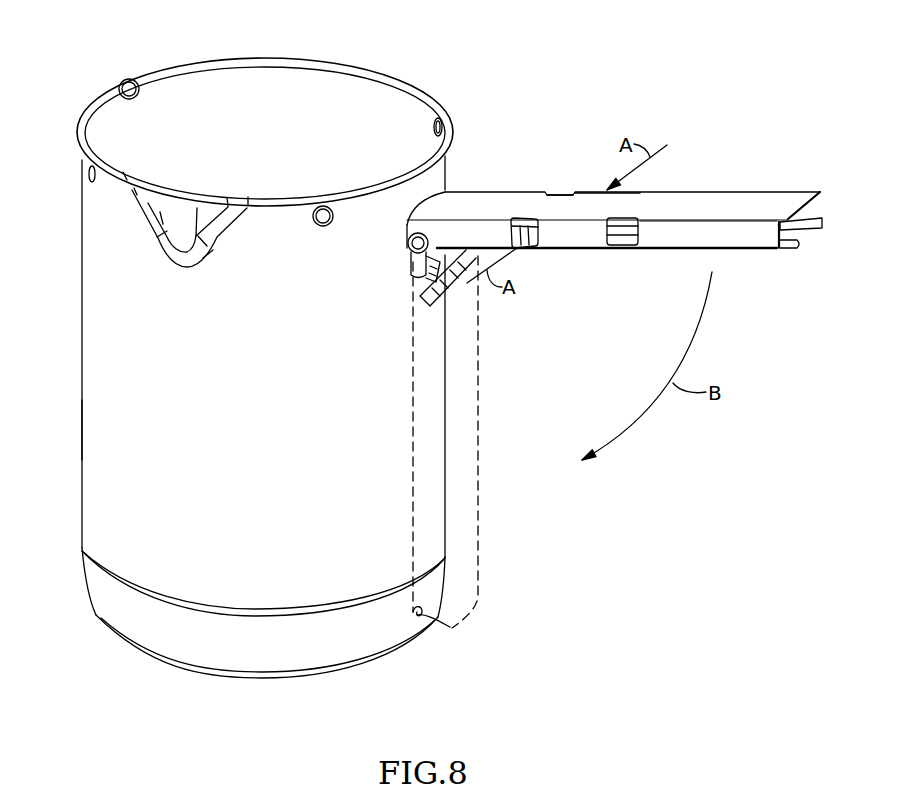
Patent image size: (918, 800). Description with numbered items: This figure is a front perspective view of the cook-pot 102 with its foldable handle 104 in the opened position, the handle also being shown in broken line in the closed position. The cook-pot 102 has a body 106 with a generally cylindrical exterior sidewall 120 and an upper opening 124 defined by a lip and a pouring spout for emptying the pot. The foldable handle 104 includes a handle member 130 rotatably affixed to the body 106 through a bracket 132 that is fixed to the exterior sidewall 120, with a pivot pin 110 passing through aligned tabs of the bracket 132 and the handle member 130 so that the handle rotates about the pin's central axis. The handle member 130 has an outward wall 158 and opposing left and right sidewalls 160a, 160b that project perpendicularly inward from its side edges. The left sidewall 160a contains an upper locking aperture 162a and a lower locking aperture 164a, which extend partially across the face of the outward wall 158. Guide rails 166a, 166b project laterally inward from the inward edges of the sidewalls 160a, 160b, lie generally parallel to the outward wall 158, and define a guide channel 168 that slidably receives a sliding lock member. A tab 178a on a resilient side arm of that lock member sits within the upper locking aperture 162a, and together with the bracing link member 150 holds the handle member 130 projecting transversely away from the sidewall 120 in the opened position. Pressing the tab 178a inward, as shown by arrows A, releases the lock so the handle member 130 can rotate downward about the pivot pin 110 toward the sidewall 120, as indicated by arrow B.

The cook-pot 102 is at (80, 268).
The foldable handle 104 is at (643, 360).
The body 106 is at (266, 382).
The pivot pin 110 is at (426, 238).
The exterior sidewall 120 is at (97, 430).
The upper opening 124 is at (312, 92).
The handle member 130 is at (745, 200).
The bracket 132 is at (440, 280).
The bracing link member 150 is at (450, 300).
The outward wall 158 is at (714, 217).
The left sidewall 160a is at (672, 232).
The right sidewall 160b is at (816, 208).
The upper locking aperture 162a is at (552, 232).
The lower locking aperture 164a is at (620, 240).
The guide rail 166a is at (793, 249).
The guide rail 166b is at (825, 218).
The guide channel 168 is at (818, 250).
The tab 178a is at (520, 218).